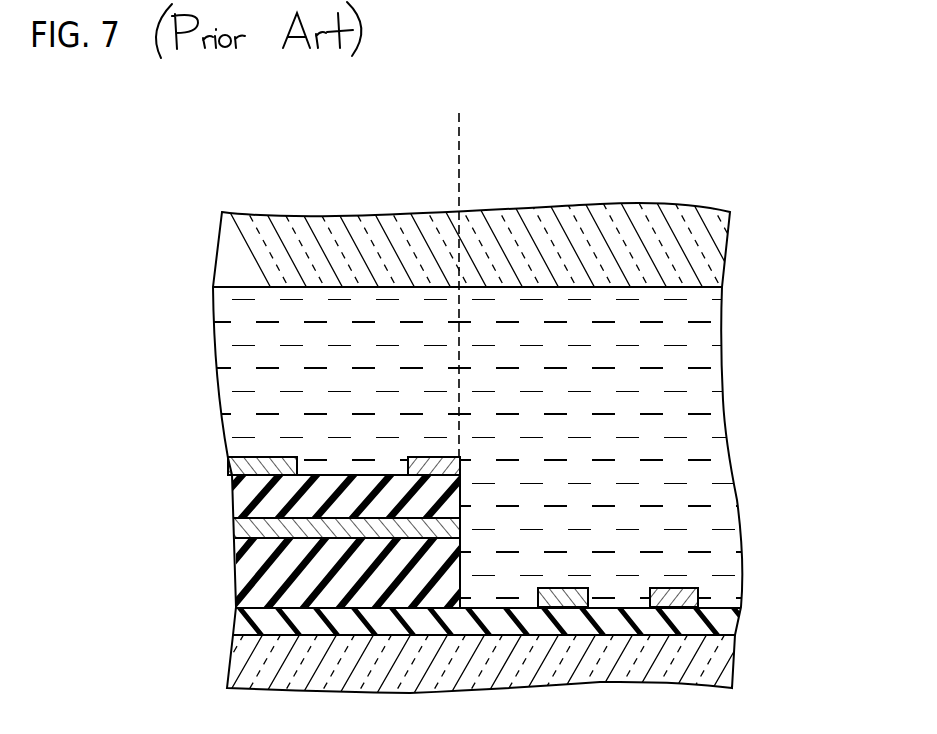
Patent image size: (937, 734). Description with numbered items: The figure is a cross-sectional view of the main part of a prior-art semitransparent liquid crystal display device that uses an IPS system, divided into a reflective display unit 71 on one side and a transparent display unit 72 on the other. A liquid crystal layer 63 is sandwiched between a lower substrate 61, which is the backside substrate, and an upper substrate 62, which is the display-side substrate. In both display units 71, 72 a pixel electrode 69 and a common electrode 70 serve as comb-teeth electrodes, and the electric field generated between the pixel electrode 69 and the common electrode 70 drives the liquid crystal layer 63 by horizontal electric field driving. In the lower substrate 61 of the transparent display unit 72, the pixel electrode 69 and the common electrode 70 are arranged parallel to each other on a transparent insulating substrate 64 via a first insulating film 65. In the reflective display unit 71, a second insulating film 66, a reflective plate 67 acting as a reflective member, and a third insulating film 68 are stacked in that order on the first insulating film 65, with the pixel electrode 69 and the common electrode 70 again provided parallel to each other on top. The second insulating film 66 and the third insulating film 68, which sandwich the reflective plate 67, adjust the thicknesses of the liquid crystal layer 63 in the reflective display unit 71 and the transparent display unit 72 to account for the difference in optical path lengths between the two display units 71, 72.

The lower substrate 61 is at (501, 650).
The upper substrate 62 is at (750, 212).
The liquid crystal layer 63 is at (716, 402).
The transparent insulating substrate 64 is at (240, 660).
The first insulating film 65 is at (240, 621).
The second insulating film 66 is at (242, 572).
The reflective plate 67 is at (235, 530).
The third insulating film 68 is at (232, 492).
The pixel electrode 69 is at (262, 457).
The common electrode 70 is at (435, 457).
The reflective display unit 71 is at (354, 364).
The transparent display unit 72 is at (567, 286).